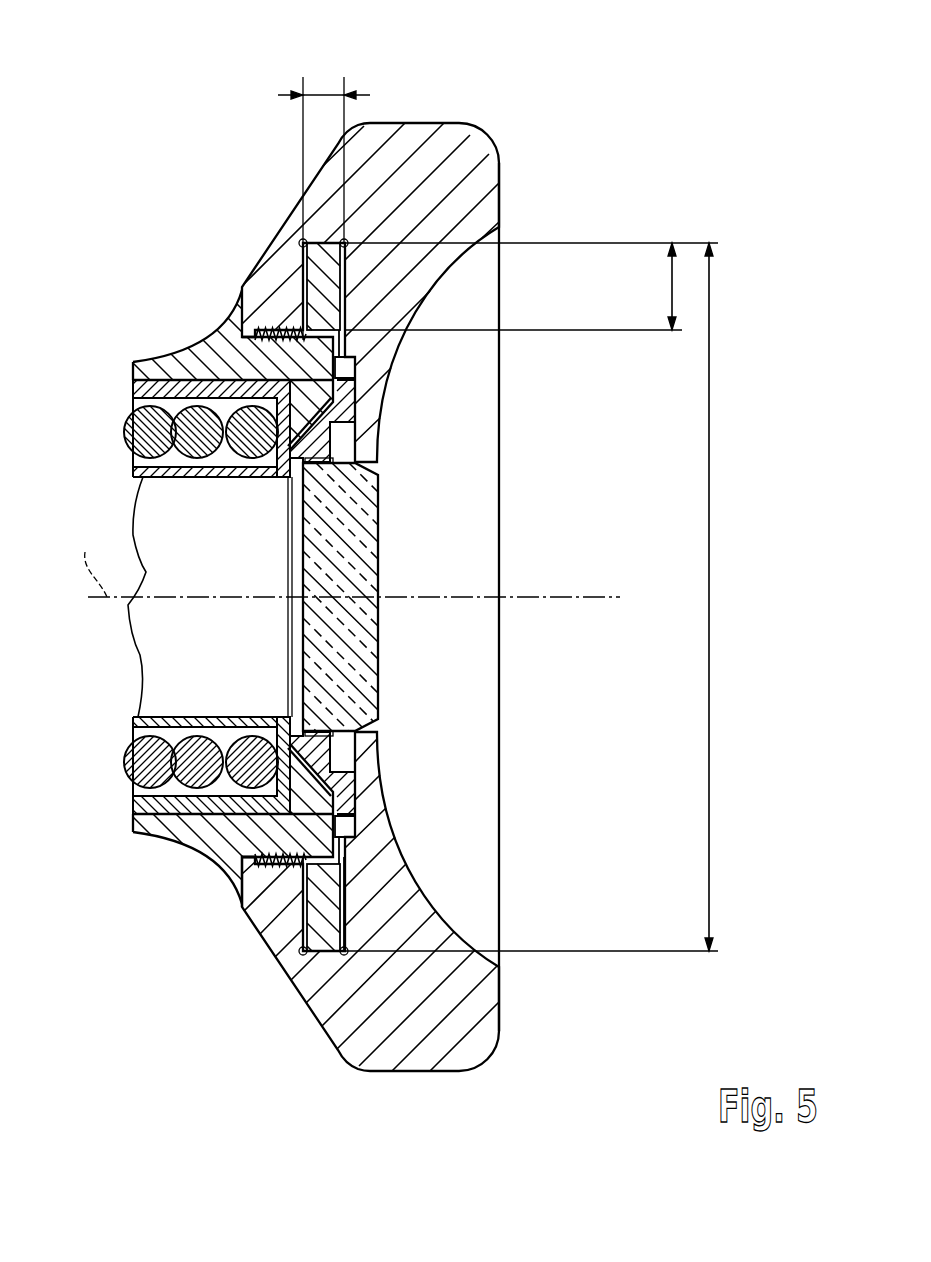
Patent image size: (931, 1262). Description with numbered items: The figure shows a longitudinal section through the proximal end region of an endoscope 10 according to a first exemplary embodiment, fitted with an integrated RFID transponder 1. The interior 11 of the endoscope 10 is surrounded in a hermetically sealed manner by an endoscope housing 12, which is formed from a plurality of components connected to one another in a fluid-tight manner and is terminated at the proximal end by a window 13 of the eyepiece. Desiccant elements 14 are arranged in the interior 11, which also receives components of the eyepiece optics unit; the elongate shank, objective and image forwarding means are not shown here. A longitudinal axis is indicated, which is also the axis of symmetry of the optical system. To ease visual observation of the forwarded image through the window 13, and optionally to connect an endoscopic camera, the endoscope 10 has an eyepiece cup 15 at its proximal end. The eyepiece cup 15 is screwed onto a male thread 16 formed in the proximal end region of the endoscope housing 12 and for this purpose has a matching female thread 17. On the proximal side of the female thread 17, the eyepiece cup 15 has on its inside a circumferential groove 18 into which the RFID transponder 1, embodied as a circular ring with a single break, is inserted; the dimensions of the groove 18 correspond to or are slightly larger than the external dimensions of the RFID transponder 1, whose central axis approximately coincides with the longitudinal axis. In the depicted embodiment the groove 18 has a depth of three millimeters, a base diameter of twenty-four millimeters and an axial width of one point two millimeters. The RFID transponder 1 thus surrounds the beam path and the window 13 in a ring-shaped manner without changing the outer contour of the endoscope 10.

The endoscope 10 is at (507, 82).
The eyepiece cup 15 is at (483, 178).
The window 13 is at (345, 535).
The endoscope housing 12 is at (208, 357).
The desiccant elements 14 is at (143, 763).
The interior 11 is at (150, 632).
The RFID transponder 1 is at (320, 272).
The male thread 16 is at (258, 332).
The female thread 17 is at (287, 862).
The circumferential groove 18 is at (347, 897).